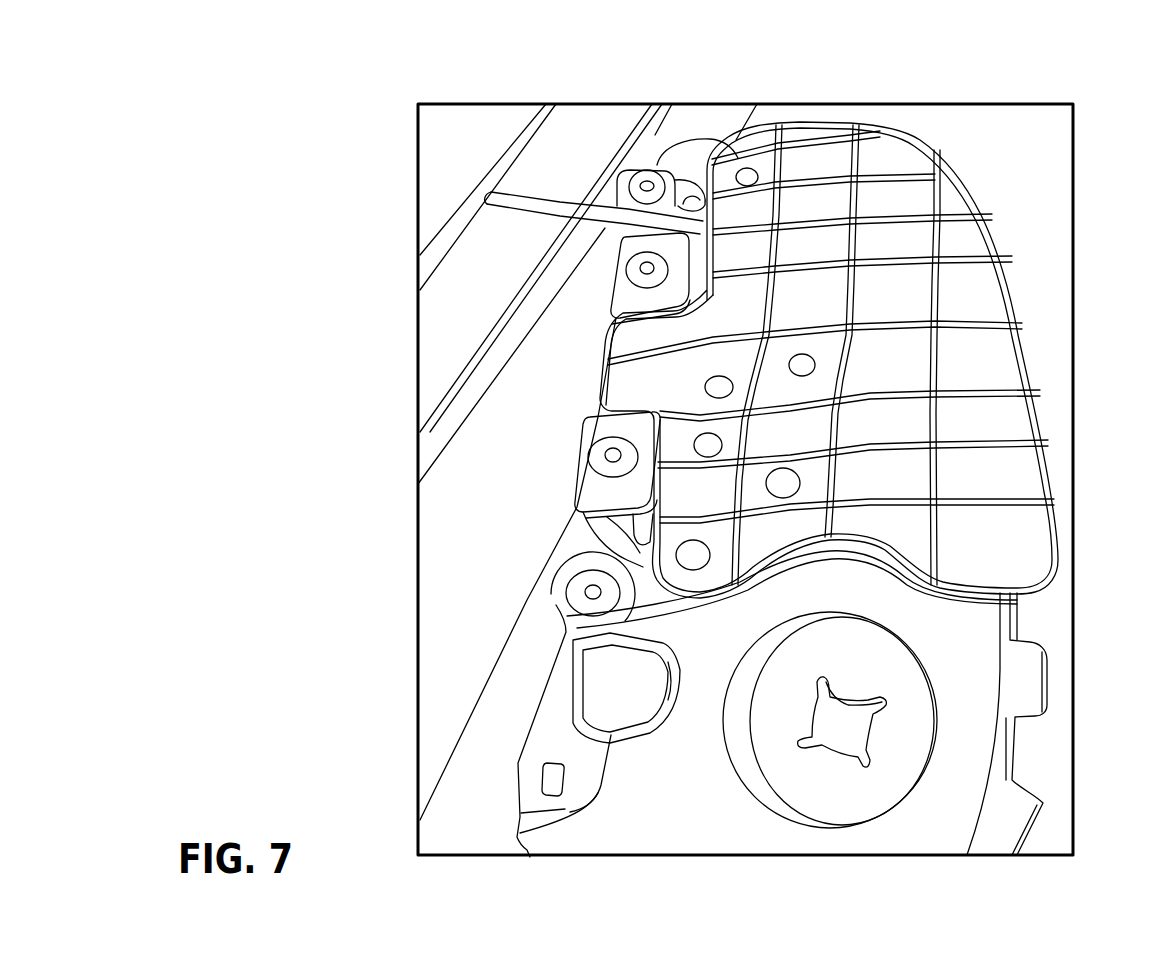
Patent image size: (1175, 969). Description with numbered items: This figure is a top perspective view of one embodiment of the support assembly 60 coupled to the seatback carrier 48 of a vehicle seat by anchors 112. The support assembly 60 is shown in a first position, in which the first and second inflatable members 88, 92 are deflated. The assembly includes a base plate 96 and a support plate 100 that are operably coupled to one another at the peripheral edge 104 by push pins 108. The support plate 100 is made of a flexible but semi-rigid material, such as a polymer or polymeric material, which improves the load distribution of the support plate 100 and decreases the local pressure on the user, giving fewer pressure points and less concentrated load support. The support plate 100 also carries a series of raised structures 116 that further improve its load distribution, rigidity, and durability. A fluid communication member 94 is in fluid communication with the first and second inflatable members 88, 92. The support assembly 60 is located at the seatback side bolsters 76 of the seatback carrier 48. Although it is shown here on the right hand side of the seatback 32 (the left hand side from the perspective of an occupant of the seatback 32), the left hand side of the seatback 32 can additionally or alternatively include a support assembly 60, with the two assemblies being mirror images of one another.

The seatback 32 is at (700, 128).
The seatback carrier 48 is at (1022, 677).
The support assembly 60 is at (984, 367).
The seatback side bolsters 76 is at (657, 800).
The first inflatable member 88 is at (623, 545).
The second inflatable member 92 is at (610, 560).
The fluid communication member 94 is at (548, 206).
The base plate 96 is at (627, 207).
The support plate 100 is at (823, 316).
The peripheral edge 104 is at (605, 373).
The push pins 108 is at (645, 270).
The anchors 112 is at (648, 186).
The raised structures 116 is at (910, 393).